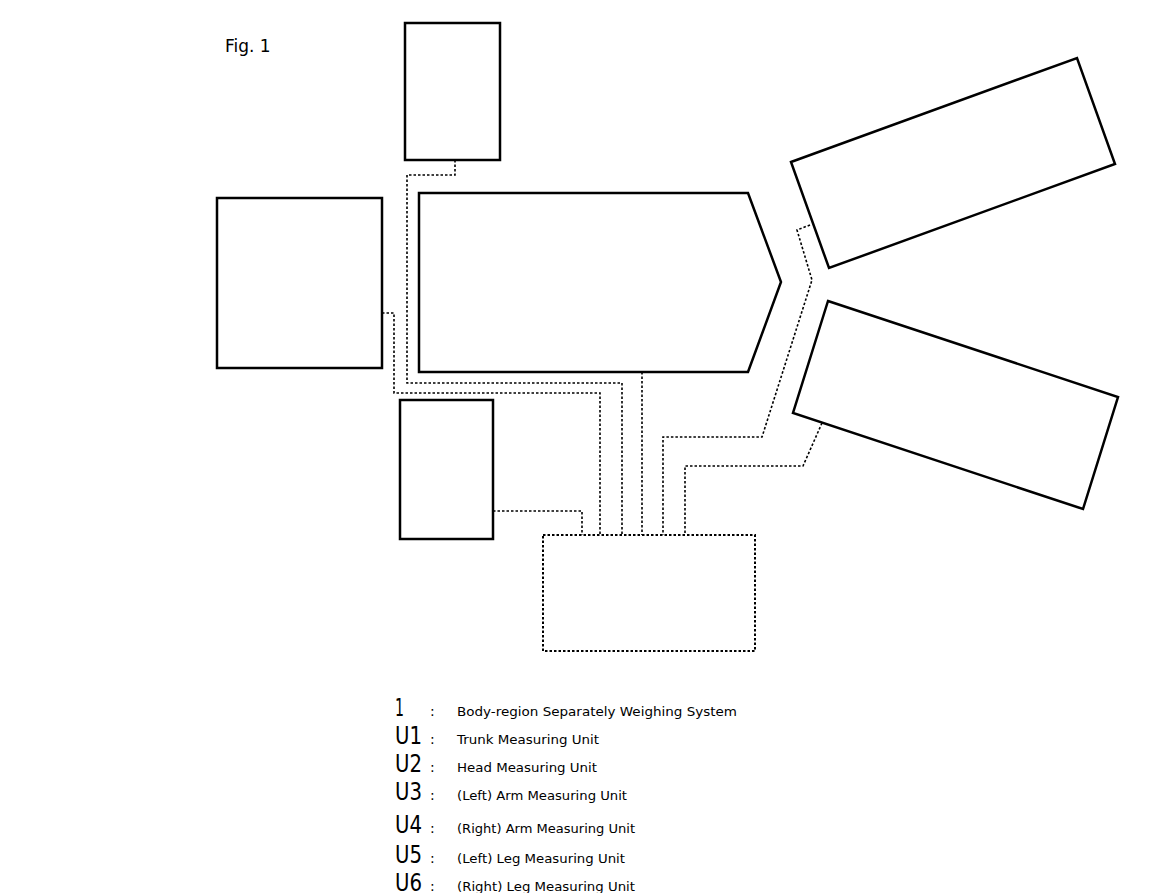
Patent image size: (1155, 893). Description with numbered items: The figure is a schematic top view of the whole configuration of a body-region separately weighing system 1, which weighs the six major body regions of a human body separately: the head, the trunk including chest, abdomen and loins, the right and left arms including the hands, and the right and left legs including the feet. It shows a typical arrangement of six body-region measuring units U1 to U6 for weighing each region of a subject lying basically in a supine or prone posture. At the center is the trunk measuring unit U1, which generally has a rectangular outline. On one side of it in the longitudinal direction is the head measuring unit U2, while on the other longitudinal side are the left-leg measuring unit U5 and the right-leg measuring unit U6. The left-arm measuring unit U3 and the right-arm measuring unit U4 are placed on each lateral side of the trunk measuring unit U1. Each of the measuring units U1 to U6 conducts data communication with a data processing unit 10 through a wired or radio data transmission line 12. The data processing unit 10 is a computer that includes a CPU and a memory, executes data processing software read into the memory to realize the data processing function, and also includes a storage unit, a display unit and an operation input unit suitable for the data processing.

The body-region separately weighing system 1 is at (333, 161).
The trunk measuring unit U1 is at (595, 199).
The head measuring unit U2 is at (270, 212).
The left-arm measuring unit U3 is at (480, 86).
The right-arm measuring unit U4 is at (487, 471).
The left-leg measuring unit U5 is at (927, 130).
The right-leg measuring unit U6 is at (913, 440).
The data processing unit 10 is at (654, 637).
The data transmission line 12 is at (748, 468).